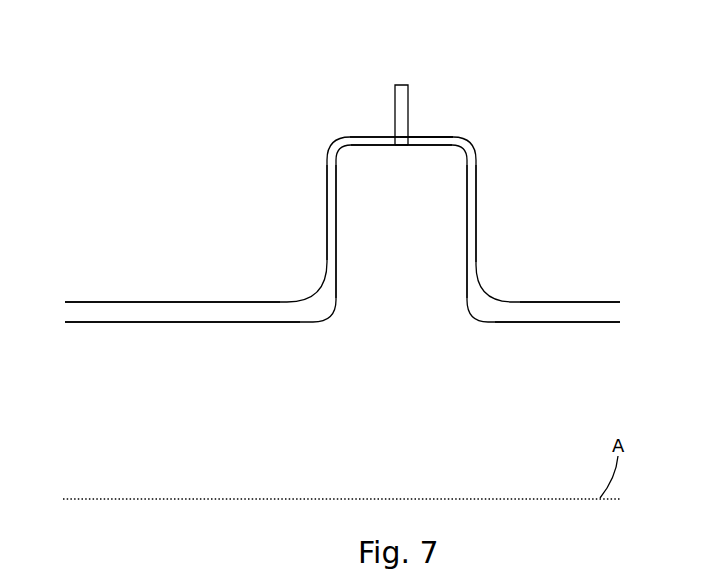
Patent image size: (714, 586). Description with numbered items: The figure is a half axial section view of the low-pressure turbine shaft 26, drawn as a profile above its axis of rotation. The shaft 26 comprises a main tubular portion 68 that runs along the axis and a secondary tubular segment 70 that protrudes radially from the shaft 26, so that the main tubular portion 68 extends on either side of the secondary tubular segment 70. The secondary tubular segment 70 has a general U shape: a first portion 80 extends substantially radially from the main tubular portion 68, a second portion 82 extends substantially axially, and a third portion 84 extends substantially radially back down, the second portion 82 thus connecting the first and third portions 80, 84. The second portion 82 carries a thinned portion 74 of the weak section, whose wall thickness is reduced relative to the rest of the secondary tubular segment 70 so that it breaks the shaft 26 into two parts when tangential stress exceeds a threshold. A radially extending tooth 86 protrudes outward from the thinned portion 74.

The shaft 26 is at (72, 299).
The main tubular portion 68 is at (172, 311).
The secondary tubular segment 70 is at (445, 135).
The thinned portion 74 is at (402, 150).
The first portion 80 is at (327, 207).
The second portion 82 is at (362, 137).
The third portion 84 is at (476, 200).
The tooth 86 is at (402, 85).